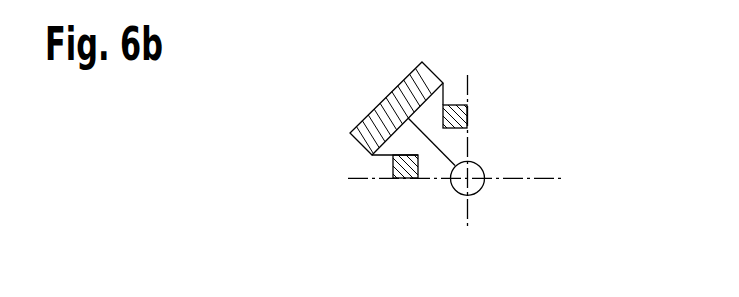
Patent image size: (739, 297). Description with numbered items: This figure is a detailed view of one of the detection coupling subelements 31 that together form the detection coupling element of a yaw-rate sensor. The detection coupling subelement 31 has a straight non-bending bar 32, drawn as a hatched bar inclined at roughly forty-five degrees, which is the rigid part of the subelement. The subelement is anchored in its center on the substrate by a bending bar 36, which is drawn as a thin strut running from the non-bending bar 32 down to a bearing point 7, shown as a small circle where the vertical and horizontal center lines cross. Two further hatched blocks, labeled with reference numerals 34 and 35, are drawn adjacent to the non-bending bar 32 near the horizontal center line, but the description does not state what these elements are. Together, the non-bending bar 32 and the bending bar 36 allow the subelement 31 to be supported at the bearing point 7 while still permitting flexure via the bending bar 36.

The detection coupling subelement 31 is at (522, 82).
The straight non-bending bar 32 is at (380, 120).
The support plate 34 is at (383, 157).
The bearing block 35 is at (405, 170).
The bending bar 36 is at (442, 152).
The bearing point 7 is at (473, 183).